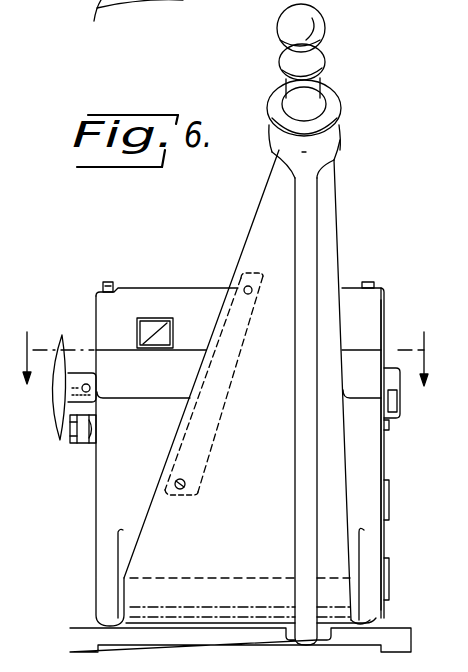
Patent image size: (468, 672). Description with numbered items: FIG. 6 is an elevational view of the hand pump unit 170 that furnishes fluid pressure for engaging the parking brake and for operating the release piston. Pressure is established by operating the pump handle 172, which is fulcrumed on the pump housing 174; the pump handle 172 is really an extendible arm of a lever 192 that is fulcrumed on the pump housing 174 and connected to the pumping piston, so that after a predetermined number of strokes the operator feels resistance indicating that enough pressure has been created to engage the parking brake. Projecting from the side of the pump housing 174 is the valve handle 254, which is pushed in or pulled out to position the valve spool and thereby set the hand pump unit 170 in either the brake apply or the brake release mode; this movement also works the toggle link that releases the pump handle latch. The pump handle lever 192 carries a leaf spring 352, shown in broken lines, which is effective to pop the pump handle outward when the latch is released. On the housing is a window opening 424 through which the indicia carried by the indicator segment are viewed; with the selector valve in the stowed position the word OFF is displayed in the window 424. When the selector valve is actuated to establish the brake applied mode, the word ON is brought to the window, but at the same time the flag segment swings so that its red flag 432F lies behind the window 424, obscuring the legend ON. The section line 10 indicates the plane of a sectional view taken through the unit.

The section line 10- 10 is at (227, 344).
The hand pump unit 170 is at (355, 262).
The pump handle 172 is at (314, 106).
The pump housing 174 is at (374, 470).
The lever 192 is at (263, 203).
The valve handle 254 is at (60, 440).
The leaf spring 352 is at (210, 443).
The window opening 424 is at (156, 318).
The red flag 432F is at (138, 25).